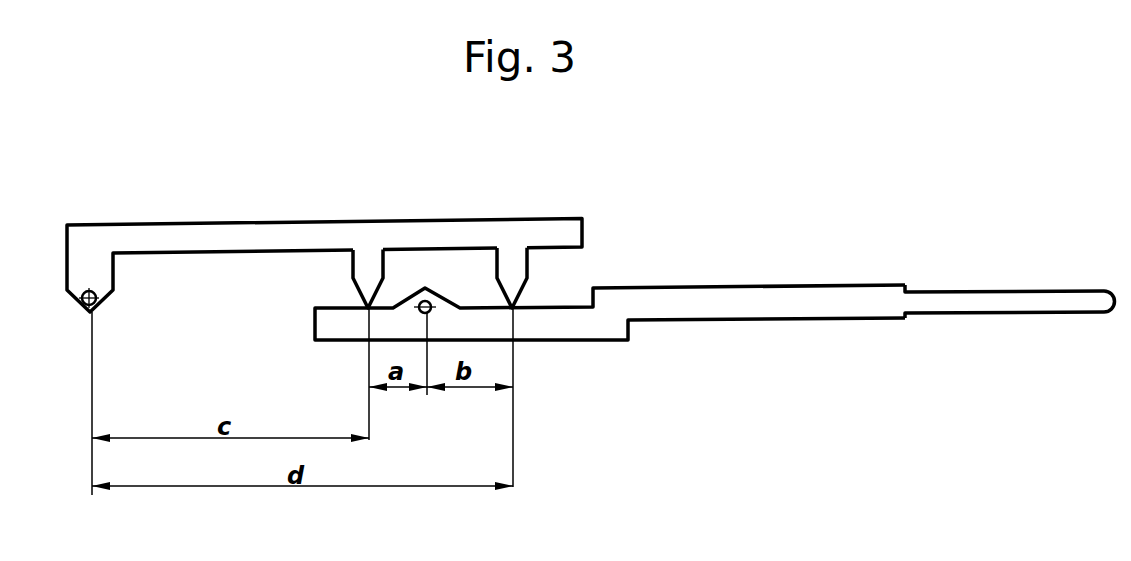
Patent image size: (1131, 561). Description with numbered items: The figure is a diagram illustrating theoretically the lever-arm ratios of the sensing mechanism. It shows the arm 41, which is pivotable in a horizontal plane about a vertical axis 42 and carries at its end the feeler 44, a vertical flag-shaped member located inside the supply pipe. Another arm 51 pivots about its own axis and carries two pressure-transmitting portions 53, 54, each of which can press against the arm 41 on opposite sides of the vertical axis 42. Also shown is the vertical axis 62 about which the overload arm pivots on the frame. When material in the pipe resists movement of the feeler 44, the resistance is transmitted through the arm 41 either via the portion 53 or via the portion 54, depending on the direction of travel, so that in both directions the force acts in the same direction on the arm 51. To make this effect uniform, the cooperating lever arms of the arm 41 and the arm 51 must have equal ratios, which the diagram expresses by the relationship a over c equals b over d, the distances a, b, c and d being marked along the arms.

The arm 41 is at (735, 310).
The vertical axis 42 is at (418, 311).
The feeler 44 is at (990, 310).
The arm 51 is at (240, 243).
The pressure-transmitting portion 53 is at (360, 265).
The pressure-transmitting portion 54 is at (512, 275).
The vertical axis 62 is at (93, 311).